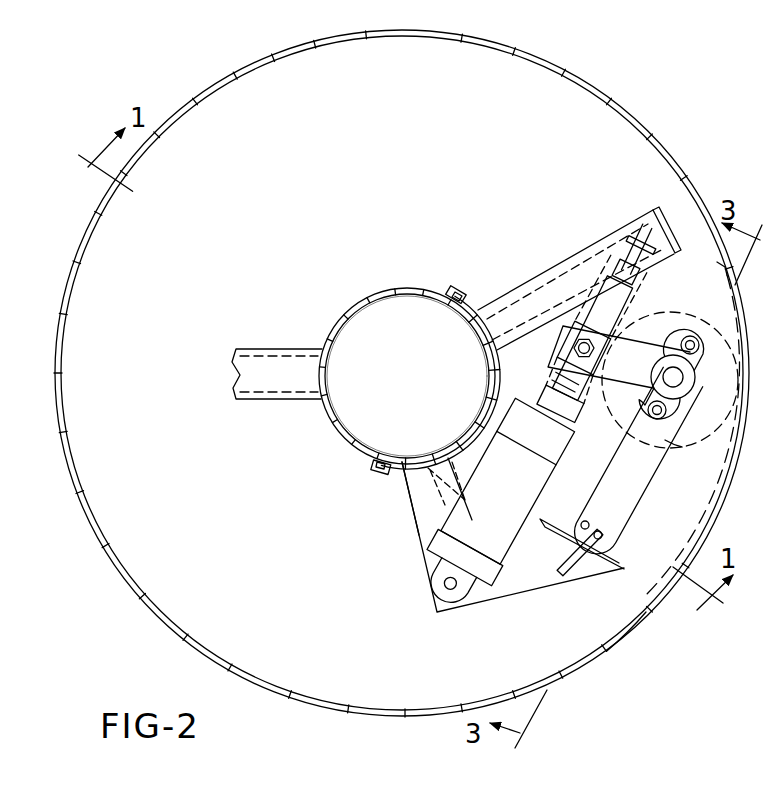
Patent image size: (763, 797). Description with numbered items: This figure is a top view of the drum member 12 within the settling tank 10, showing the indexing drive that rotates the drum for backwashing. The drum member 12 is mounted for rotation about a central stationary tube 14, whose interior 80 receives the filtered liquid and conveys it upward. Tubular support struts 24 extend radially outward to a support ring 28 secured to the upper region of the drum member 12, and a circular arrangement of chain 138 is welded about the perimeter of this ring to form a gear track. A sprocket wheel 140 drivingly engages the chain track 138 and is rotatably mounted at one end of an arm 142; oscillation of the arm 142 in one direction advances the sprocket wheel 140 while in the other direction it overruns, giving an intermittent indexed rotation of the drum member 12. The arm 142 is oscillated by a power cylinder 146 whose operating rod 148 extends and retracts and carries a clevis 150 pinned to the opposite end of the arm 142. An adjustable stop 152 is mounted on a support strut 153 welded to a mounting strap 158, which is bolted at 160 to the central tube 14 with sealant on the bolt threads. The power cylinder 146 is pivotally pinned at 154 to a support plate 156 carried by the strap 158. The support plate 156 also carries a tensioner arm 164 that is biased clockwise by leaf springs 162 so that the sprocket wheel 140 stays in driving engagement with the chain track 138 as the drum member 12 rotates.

The settling tank 10 is at (760, 716).
The drum member 12 is at (652, 72).
The central stationary tube 14 is at (328, 322).
The tubular support struts 24 is at (290, 391).
The support ring 28 is at (647, 618).
The interior of the central tube 80 is at (392, 351).
The chain track 138 is at (696, 530).
The sprocket wheel 140 is at (671, 472).
The arm 142 is at (643, 374).
The power cylinder 146 is at (505, 524).
The operating rod 148 is at (563, 380).
The clevis 150 is at (563, 308).
The adjustable stop 152 is at (646, 223).
The support strut 153 is at (590, 299).
The pivot pin 154 is at (445, 593).
The support plate 156 is at (424, 543).
The mounting strap 158 is at (408, 492).
The bolt 160 is at (452, 292).
The leaf springs 162 is at (566, 520).
The tensioner arm 164 is at (638, 484).